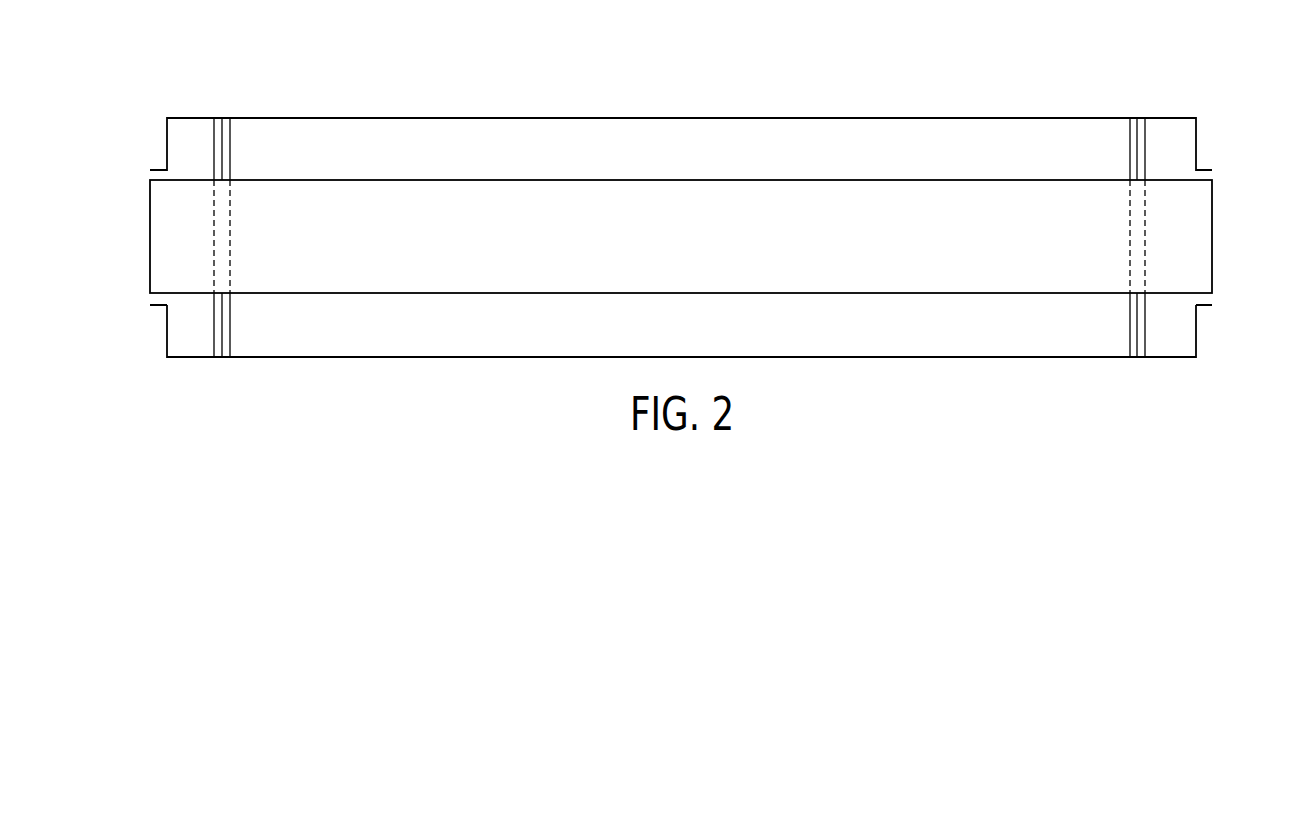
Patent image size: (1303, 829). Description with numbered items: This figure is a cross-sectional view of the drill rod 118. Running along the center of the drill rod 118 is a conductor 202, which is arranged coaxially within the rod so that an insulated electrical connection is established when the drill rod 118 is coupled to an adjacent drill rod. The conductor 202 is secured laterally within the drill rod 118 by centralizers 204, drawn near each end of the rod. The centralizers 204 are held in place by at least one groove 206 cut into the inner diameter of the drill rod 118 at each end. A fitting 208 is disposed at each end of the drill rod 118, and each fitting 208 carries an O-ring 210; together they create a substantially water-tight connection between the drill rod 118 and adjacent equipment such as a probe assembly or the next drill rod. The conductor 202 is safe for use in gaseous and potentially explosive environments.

The drill rod 118 is at (1028, 118).
The conductor 202 is at (478, 179).
The centralizers 204 is at (223, 147).
The groove 206 is at (232, 173).
The fitting 208 is at (165, 335).
The O-ring 210 is at (165, 306).